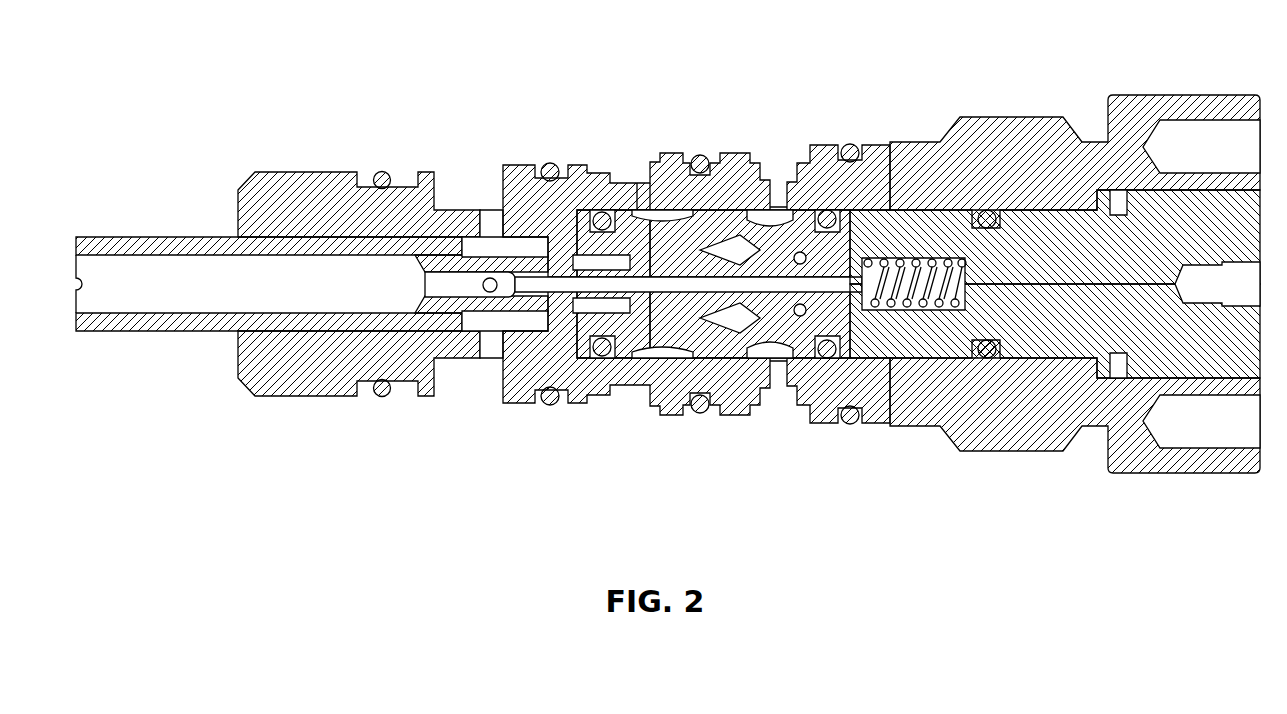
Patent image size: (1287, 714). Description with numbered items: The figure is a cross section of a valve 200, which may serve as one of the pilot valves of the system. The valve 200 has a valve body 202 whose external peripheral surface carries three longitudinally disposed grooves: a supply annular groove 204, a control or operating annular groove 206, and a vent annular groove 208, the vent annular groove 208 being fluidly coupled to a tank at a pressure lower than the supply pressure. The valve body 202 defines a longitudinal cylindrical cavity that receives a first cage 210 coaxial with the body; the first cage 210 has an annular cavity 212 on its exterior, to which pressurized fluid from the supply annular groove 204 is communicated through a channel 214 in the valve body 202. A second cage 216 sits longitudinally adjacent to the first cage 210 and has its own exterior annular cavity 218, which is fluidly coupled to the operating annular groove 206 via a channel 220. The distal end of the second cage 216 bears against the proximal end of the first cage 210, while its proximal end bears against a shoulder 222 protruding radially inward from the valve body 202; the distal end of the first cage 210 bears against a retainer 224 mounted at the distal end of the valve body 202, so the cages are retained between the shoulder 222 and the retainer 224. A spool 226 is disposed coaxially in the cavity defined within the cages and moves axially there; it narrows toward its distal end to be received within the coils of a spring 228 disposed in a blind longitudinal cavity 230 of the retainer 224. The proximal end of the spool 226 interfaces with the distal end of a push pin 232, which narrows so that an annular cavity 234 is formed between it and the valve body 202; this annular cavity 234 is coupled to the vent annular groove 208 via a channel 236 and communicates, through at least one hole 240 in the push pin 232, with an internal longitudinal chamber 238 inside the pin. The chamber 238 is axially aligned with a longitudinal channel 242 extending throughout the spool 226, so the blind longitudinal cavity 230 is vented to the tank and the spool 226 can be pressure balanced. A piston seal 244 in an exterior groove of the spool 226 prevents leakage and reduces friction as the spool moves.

The valve 200 is at (218, 90).
The valve body 202 is at (915, 150).
The supply annular groove 204 is at (780, 165).
The operating annular groove 206 is at (636, 229).
The vent annular groove 208 is at (457, 185).
The first cage 210 is at (736, 300).
The annular cavity 212 is at (785, 208).
The gap 214 is at (772, 205).
The second cage 216 is at (574, 297).
The annular cavity 218 is at (680, 214).
The channel 220 is at (645, 195).
The shoulder 222 is at (565, 240).
The retainer 224 is at (1037, 289).
The spool 226 is at (673, 310).
The spring 228 is at (907, 308).
The blind longitudinal cavity 230 is at (949, 248).
The push pin 232 is at (432, 320).
The annular cavity 234 is at (522, 328).
The channel 236 is at (445, 312).
The internal longitudinal chamber 238 is at (452, 285).
The hole 240 is at (485, 292).
The longitudinal channel 242 is at (717, 292).
The piston seal 244 is at (803, 316).